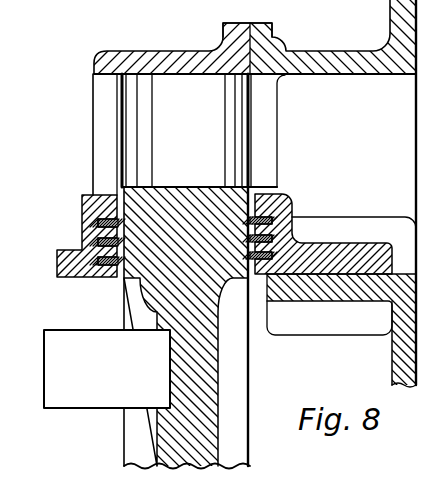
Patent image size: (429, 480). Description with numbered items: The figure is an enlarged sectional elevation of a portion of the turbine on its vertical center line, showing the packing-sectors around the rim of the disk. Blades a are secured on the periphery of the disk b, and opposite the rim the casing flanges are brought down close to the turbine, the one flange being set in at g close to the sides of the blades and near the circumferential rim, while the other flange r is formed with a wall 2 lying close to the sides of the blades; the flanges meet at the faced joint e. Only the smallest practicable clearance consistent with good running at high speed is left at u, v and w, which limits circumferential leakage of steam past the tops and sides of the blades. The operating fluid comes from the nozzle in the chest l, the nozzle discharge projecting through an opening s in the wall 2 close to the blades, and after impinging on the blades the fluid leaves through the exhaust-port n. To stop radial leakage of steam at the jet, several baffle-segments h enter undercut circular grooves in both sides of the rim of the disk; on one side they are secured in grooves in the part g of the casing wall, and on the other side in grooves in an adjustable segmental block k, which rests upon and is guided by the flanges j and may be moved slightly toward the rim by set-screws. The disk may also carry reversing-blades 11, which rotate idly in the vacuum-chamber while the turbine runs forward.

The blades a is at (177, 113).
The disk b is at (220, 388).
The faced joint e is at (274, 38).
The flange r is at (343, 50).
The clearance v is at (176, 72).
The exhaust-port n is at (100, 107).
The clearance u is at (122, 157).
The clearance w is at (250, 123).
The opening s is at (270, 143).
The chest l is at (354, 192).
The wall 2 is at (277, 172).
The set-in part of flange g is at (80, 225).
The baffle-segments h is at (97, 264).
The adjustable segmental block k is at (347, 245).
The flanges j is at (343, 296).
The reversing-blades 11 is at (107, 369).